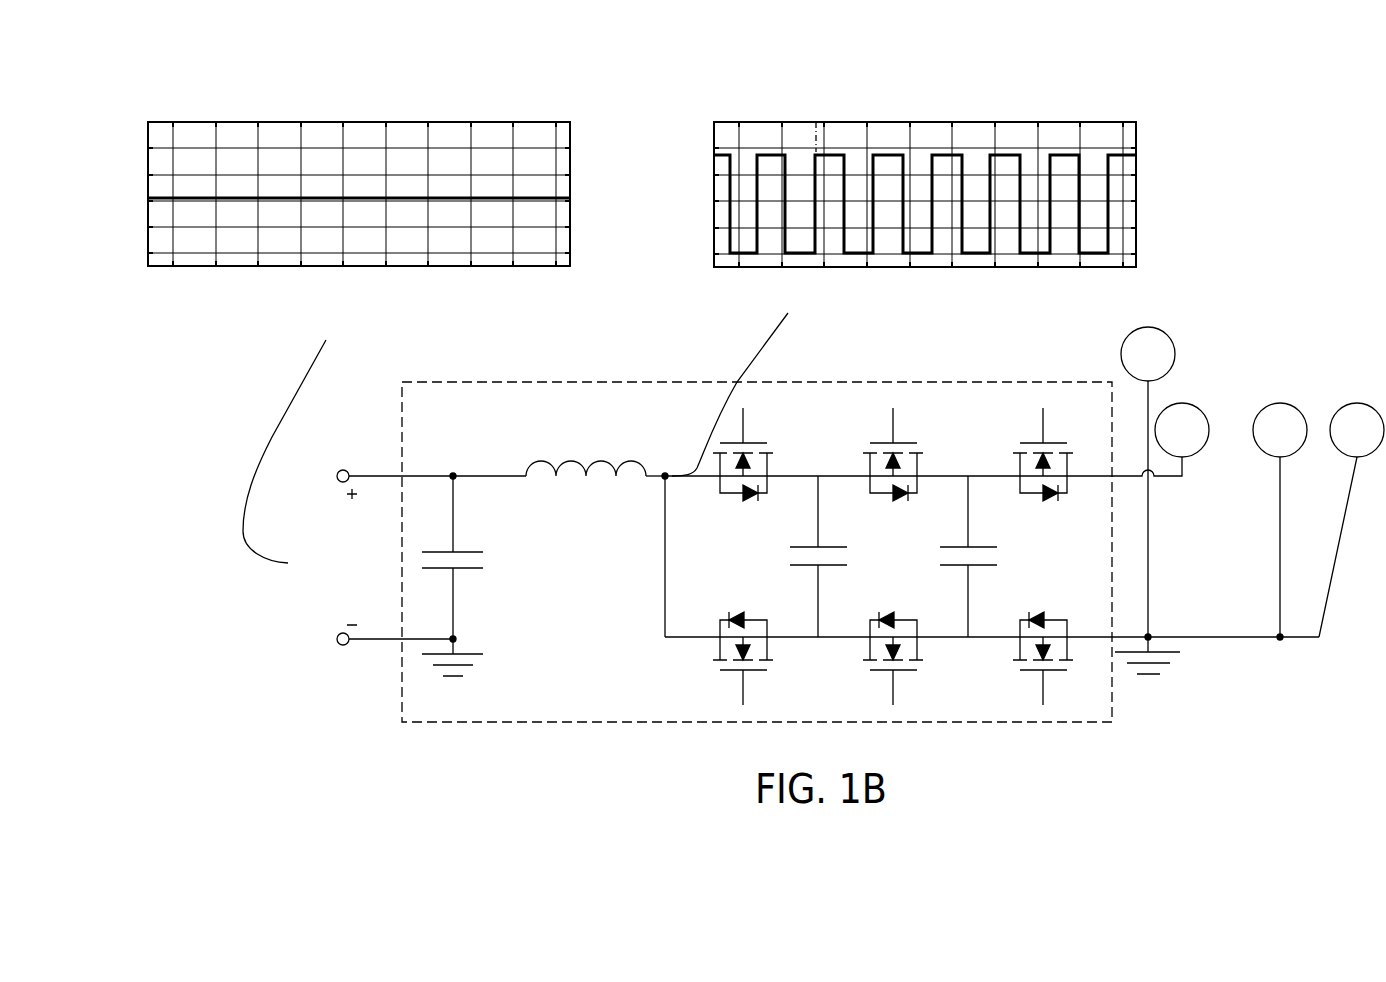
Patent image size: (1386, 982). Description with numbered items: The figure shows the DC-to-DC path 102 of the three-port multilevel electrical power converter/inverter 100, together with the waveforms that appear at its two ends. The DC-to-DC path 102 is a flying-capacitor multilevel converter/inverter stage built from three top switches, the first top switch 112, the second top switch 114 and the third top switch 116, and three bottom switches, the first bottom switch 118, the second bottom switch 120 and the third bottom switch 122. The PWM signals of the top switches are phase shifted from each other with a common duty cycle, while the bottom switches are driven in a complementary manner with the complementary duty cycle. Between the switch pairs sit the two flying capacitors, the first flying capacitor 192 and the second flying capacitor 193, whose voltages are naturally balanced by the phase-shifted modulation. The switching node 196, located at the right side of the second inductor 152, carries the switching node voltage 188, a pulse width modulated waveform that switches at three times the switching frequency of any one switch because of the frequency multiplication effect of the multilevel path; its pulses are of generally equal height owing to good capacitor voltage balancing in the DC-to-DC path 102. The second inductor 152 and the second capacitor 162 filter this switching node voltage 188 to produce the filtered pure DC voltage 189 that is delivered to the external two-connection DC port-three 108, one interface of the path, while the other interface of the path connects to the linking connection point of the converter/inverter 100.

The three-port multilevel electrical power converter/inverter 100 is at (1210, 754).
The DC-to-DC path 102 is at (388, 706).
The DC port-3 108 is at (325, 594).
The switch TS21 112 is at (718, 495).
The switch TS22 114 is at (868, 495).
The switch TS23 116 is at (1018, 495).
The switch BS21 118 is at (718, 618).
The switch BS22 120 is at (870, 618).
The switch BS23 122 is at (1020, 618).
The inductor L2 152 is at (566, 466).
The capacitor C2 162 is at (471, 568).
The switching node voltage 188 is at (1097, 122).
The filtered pure DC voltage 189 is at (528, 122).
The flying capacitor Cf21 192 is at (738, 537).
The flying capacitor Cf22 193 is at (890, 537).
The node Vn2 196 is at (665, 447).